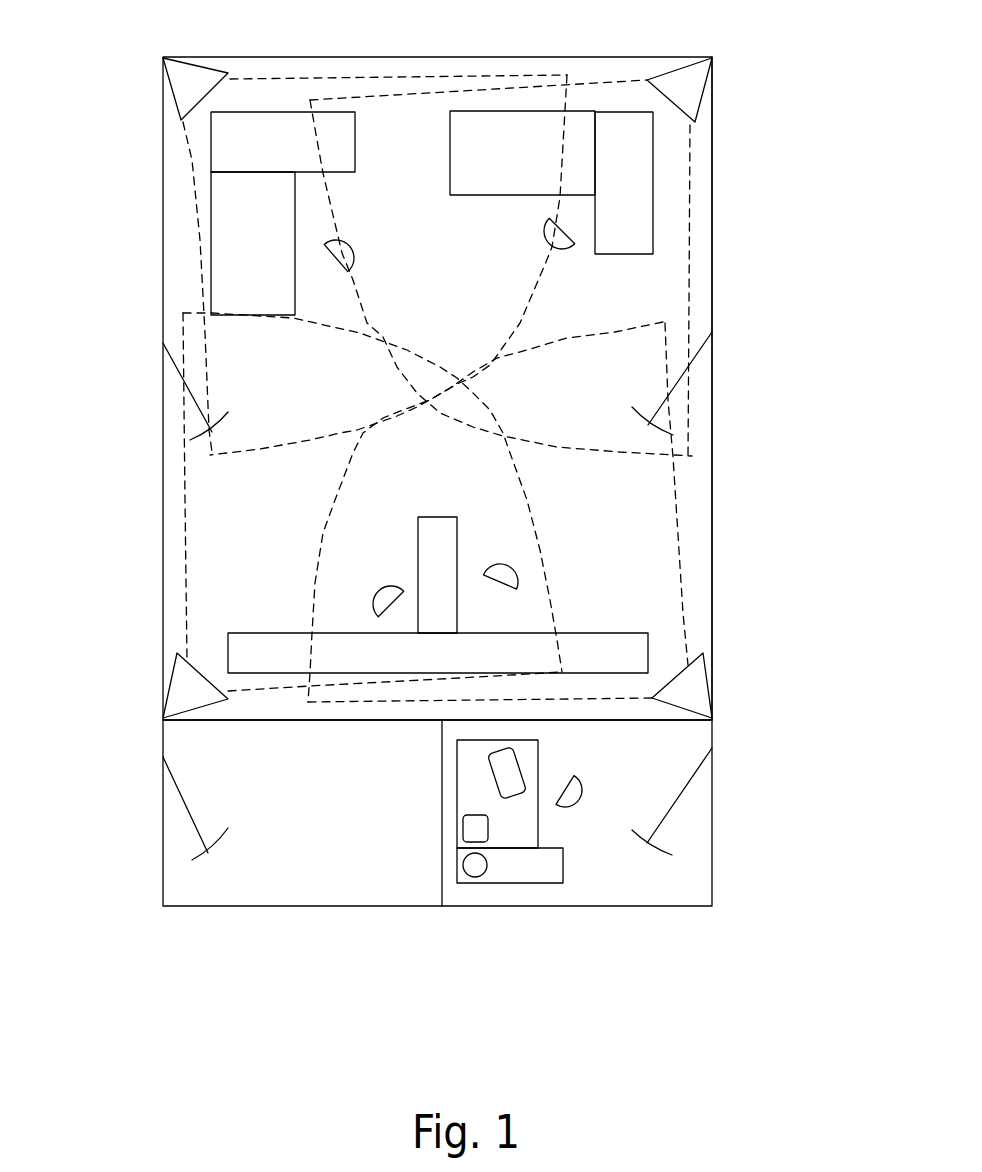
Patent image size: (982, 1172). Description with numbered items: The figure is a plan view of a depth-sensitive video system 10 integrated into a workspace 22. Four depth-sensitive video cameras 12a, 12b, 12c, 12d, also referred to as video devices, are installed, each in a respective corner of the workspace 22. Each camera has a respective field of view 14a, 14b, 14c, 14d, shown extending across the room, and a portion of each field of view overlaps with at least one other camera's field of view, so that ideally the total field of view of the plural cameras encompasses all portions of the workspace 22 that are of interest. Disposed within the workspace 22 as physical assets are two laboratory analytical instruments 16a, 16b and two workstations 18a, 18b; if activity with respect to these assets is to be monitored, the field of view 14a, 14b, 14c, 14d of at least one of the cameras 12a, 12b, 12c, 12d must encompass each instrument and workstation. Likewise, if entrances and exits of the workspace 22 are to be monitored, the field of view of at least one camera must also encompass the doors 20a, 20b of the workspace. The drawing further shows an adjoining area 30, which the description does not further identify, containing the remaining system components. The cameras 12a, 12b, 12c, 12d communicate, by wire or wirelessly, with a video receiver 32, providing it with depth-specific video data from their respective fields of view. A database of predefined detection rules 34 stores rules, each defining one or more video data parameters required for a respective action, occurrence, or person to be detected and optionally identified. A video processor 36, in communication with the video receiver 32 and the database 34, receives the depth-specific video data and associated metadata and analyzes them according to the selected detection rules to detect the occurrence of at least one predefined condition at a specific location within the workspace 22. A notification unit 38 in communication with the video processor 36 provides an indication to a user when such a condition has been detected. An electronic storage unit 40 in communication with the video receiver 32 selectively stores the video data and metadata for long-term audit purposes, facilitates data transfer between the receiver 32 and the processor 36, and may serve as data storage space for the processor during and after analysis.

The depth-sensitive video system 10 is at (126, 86).
The depth-sensitive video camera 12a is at (226, 66).
The depth-sensitive video camera 12b is at (713, 67).
The depth-sensitive video camera 12c is at (733, 685).
The depth-sensitive video camera 12d is at (151, 681).
The field of view 14a is at (131, 287).
The field of view 14b is at (759, 291).
The field of view 14c is at (743, 494).
The field of view 14d is at (110, 486).
The laboratory analytical instrument 16a is at (197, 213).
The laboratory analytical instrument 16b is at (644, 183).
The workstation 18a is at (368, 626).
The workstation 18b is at (606, 582).
The door 20a is at (149, 391).
The door 20b is at (722, 383).
The workspace 22 is at (765, 388).
The adjacent room 30 is at (712, 870).
The video receiver 32 is at (522, 860).
The database of predefined detection rules 34 is at (429, 916).
The video processor 36 is at (614, 878).
The notification unit 38 is at (641, 763).
The electronic storage unit 40 is at (501, 897).